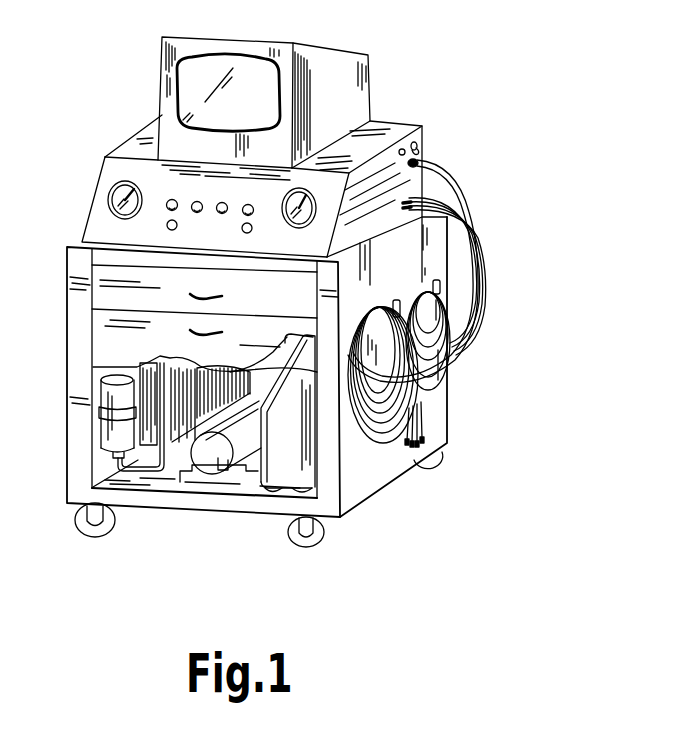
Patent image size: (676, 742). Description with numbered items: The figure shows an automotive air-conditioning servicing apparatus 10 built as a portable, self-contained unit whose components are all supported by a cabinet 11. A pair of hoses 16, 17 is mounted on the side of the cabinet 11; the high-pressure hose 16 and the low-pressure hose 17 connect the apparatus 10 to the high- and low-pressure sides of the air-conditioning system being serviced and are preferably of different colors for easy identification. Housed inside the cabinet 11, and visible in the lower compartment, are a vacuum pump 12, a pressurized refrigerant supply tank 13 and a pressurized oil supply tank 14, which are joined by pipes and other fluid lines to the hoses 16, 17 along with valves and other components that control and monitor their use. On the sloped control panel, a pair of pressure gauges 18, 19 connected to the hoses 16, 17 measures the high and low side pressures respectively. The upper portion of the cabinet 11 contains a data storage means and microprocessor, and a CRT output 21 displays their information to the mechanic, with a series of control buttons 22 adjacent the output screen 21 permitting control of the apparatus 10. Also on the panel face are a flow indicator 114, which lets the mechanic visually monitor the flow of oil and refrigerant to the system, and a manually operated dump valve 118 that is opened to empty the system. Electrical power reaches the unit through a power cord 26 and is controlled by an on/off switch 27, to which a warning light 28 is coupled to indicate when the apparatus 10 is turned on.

The air-conditioning servicing apparatus 10 is at (407, 54).
The cabinet 11 is at (67, 352).
The vacuum pump 12 is at (198, 468).
The pressurized refrigerant supply tank 13 is at (307, 453).
The pressurized oil supply tank 14 is at (110, 430).
The high-pressure hose 16 is at (472, 218).
The low-pressure hose 17 is at (478, 233).
The high-pressure gauge 18 is at (304, 196).
The low-pressure gauge 19 is at (112, 199).
The CRT output 21 is at (238, 62).
The control buttons 22 is at (168, 202).
The power cord 26 is at (398, 452).
The on/off switch 27 is at (420, 146).
The warning light 28 is at (402, 148).
The flow indicator 114 is at (166, 226).
The dump valve 118 is at (242, 231).